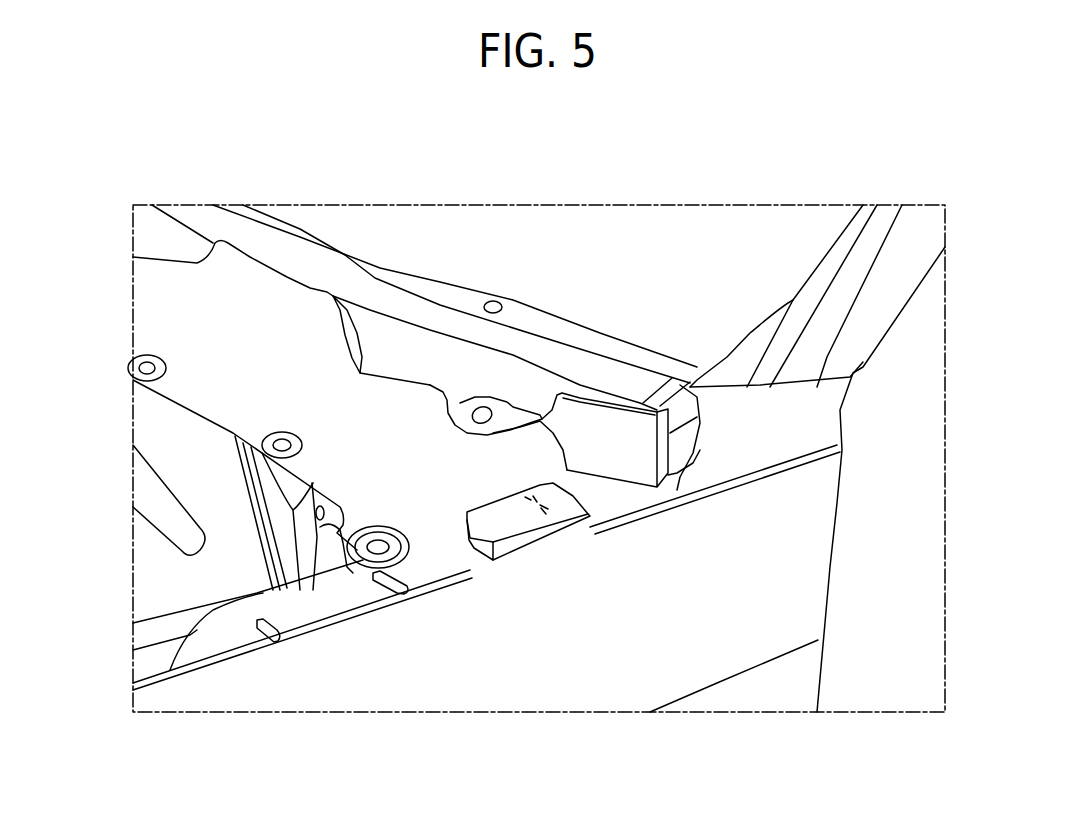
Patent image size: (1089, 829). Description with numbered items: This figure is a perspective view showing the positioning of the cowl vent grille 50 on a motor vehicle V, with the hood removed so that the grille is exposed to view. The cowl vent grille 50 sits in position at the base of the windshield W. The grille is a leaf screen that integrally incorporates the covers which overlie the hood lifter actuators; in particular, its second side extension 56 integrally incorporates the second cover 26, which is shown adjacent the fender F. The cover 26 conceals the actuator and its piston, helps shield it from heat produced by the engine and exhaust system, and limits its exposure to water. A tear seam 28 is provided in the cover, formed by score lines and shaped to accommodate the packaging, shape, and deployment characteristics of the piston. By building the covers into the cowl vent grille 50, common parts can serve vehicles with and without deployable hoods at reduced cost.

The cowl vent grille 50 is at (459, 384).
The second cover 26 is at (497, 527).
The tear seam 28 is at (538, 510).
The second side extension 56 is at (600, 512).
The windshield W is at (736, 265).
The motor vehicle V is at (955, 383).
The fender F is at (800, 558).